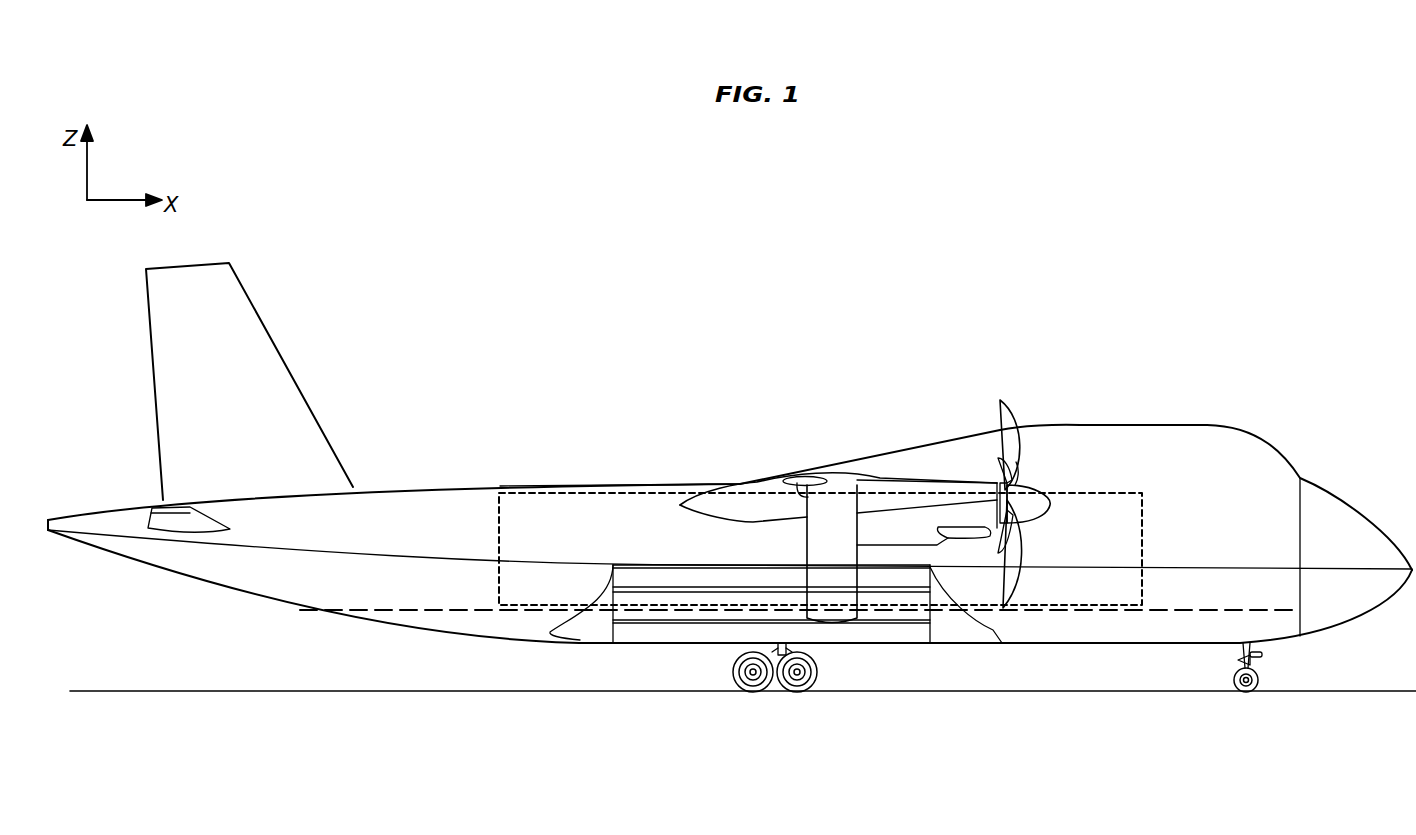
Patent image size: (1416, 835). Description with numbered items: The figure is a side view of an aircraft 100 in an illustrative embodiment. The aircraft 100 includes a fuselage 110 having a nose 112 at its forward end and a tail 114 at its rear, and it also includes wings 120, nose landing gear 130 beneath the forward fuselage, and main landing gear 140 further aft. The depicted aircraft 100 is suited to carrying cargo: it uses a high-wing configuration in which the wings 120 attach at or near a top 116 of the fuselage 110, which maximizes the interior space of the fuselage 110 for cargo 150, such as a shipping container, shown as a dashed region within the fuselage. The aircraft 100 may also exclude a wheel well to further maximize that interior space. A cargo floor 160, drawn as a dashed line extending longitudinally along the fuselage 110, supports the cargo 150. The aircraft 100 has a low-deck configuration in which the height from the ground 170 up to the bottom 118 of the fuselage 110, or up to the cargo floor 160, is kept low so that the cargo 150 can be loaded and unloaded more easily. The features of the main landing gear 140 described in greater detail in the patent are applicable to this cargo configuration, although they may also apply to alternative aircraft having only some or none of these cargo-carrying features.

The aircraft 100 is at (525, 198).
The fuselage 110 is at (471, 492).
The nose 112 is at (1373, 617).
The tail 114 is at (272, 377).
The top of the fuselage 116 is at (650, 486).
The bottom of the fuselage 118 is at (622, 650).
The wings 120 is at (762, 478).
The nose landing gear 130 is at (1244, 704).
The main landing gear 140 is at (767, 707).
The cargo 150 is at (1070, 493).
The cargo floor 160 is at (390, 610).
The ground 170 is at (461, 691).